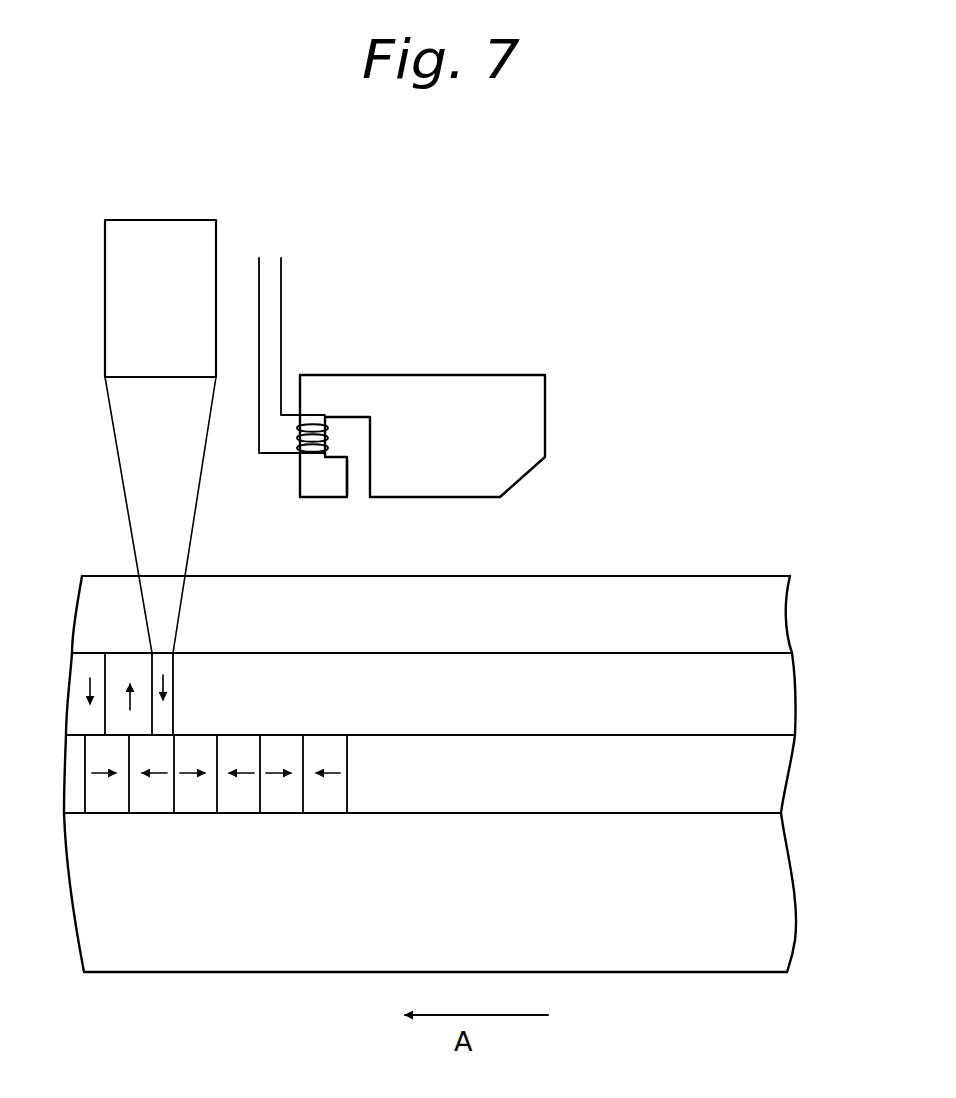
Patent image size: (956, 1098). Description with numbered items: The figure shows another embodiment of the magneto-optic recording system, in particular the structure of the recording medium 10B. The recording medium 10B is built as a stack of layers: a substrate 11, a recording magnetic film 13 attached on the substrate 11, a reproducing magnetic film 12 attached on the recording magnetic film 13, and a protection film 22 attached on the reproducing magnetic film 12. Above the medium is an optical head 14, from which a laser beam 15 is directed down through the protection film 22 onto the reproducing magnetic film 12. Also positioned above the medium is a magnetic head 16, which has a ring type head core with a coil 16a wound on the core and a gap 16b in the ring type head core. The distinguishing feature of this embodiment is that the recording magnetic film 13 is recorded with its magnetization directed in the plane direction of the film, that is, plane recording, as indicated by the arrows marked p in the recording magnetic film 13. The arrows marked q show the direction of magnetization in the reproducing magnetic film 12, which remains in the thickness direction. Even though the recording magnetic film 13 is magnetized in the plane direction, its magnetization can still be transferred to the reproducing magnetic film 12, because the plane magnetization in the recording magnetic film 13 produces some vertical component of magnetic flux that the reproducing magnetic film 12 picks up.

The optical head 14 is at (216, 243).
The laser beam 15 is at (113, 436).
The magnetic head 16 is at (508, 375).
The coil 16a is at (302, 354).
The gap 16b is at (357, 485).
The recording medium 10B is at (612, 576).
The protection film 22 is at (785, 613).
The reproducing magnetic film 12 is at (791, 692).
The recording magnetic film 13 is at (781, 777).
The substrate 11 is at (785, 860).